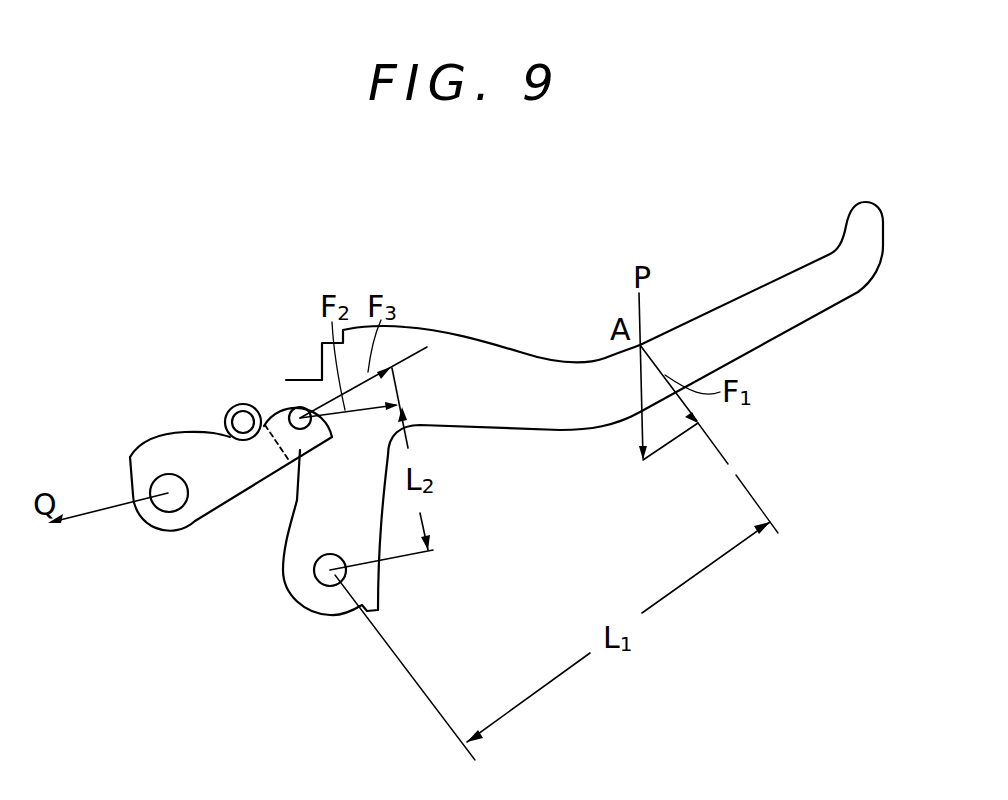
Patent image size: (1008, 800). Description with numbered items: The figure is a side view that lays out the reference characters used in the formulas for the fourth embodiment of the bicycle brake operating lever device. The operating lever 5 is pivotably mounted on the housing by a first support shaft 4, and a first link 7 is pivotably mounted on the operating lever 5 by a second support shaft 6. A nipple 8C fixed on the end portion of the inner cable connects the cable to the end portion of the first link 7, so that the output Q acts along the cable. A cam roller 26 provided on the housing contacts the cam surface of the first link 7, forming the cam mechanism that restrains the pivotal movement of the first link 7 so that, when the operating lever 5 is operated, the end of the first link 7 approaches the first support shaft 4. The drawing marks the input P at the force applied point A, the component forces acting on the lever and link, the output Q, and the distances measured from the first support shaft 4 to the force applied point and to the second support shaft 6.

The first support shaft 4 is at (330, 585).
The operating lever 5 is at (503, 348).
The second support shaft 6 is at (298, 427).
The first link 7 is at (205, 517).
The nipple 8C is at (163, 503).
The cam roller 26 is at (245, 403).